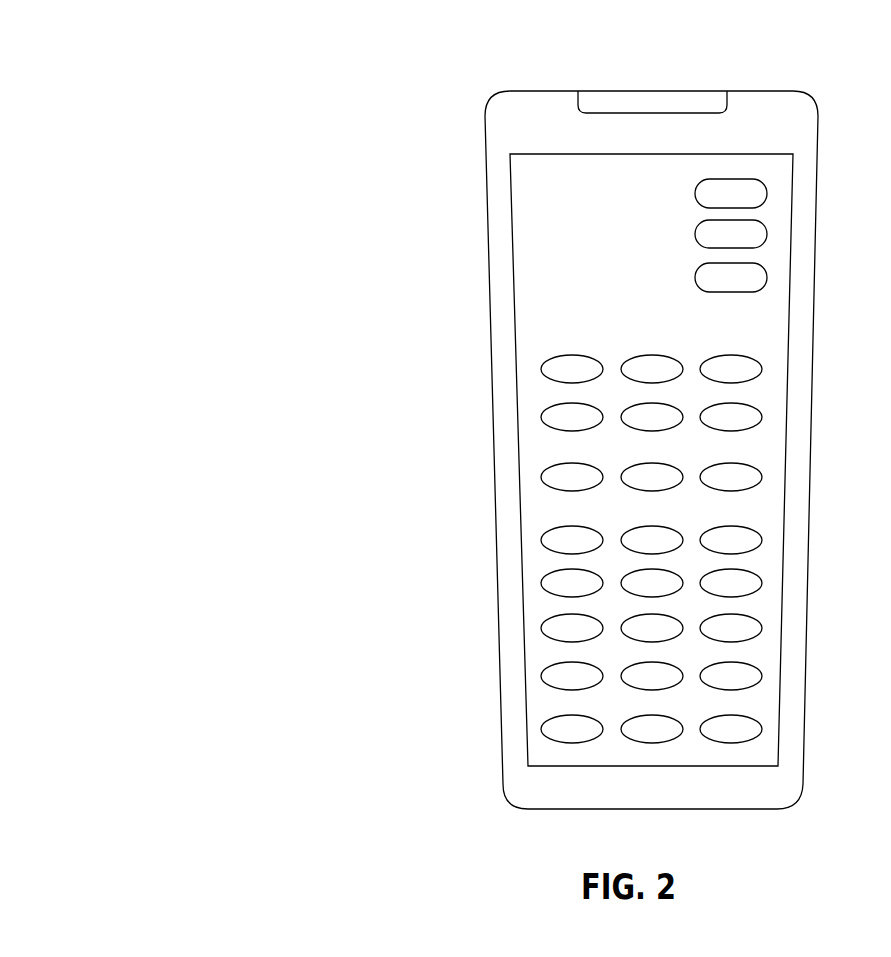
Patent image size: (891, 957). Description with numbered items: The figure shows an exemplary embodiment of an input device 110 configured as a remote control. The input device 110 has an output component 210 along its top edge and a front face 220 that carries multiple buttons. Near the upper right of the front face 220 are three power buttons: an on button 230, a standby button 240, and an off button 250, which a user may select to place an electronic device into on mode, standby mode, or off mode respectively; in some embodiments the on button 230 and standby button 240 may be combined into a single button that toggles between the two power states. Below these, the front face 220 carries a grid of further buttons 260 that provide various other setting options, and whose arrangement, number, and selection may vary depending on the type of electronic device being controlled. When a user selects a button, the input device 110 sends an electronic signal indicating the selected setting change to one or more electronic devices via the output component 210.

The input device 110 is at (53, 63).
The output component 210 is at (657, 91).
The front face 220 is at (512, 208).
The on button 230 is at (767, 194).
The standby button 240 is at (767, 234).
The off button 250 is at (767, 277).
The buttons 260 is at (490, 360).